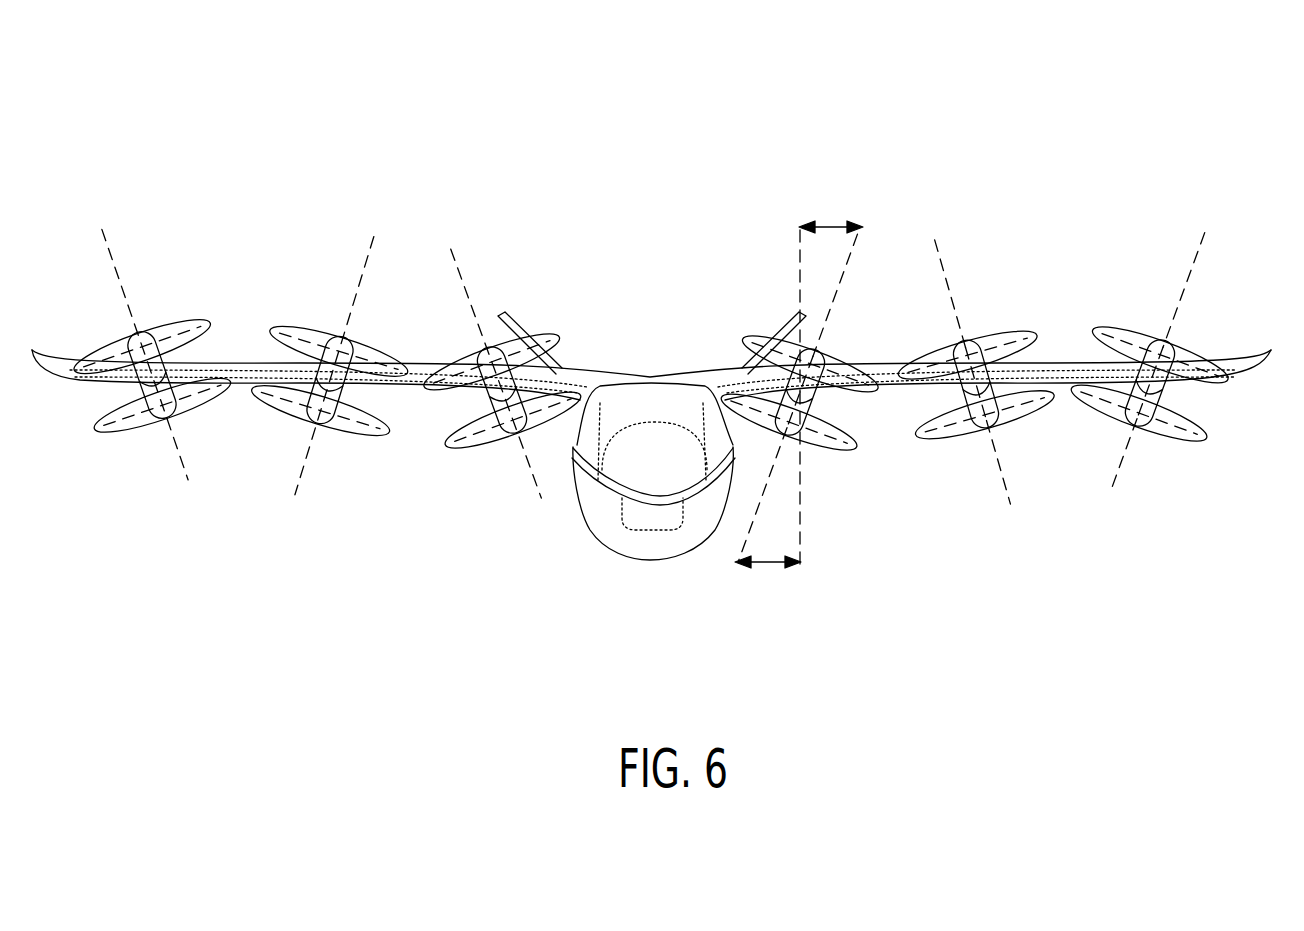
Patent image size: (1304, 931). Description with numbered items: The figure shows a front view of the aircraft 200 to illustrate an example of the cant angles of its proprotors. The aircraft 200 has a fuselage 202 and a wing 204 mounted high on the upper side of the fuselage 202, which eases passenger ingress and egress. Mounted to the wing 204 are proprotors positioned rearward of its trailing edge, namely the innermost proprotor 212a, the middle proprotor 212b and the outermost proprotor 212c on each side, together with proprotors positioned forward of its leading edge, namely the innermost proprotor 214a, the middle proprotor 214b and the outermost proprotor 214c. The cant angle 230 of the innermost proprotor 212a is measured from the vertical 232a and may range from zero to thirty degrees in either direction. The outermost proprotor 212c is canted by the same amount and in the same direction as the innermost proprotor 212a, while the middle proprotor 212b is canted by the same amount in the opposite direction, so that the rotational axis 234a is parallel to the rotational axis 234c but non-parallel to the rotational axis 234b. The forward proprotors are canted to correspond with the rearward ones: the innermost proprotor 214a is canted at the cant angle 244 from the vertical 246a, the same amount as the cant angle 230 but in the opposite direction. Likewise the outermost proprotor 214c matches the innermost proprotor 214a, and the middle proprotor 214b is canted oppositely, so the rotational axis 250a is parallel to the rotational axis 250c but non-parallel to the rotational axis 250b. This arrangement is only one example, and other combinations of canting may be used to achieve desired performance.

The aircraft 200 is at (651, 368).
The fuselage 202 is at (653, 517).
The wing 204 is at (651, 353).
The innermost proprotor 212a is at (650, 420).
The middle proprotor 212b is at (661, 426).
The outermost proprotor 212c is at (651, 405).
The innermost proprotor 214a is at (619, 373).
The middle proprotor 214b is at (645, 365).
The outermost proprotor 214c is at (656, 355).
The cant angle 230 is at (771, 596).
The vertical 232a is at (847, 481).
The rotational axis 234a is at (712, 530).
The rotational axis 234b is at (972, 481).
The rotational axis 234c is at (1153, 482).
The cant angle 244 is at (829, 194).
The vertical 246a is at (760, 311).
The rotational axis 250a is at (876, 295).
The rotational axis 250b is at (962, 275).
The rotational axis 250c is at (1167, 275).